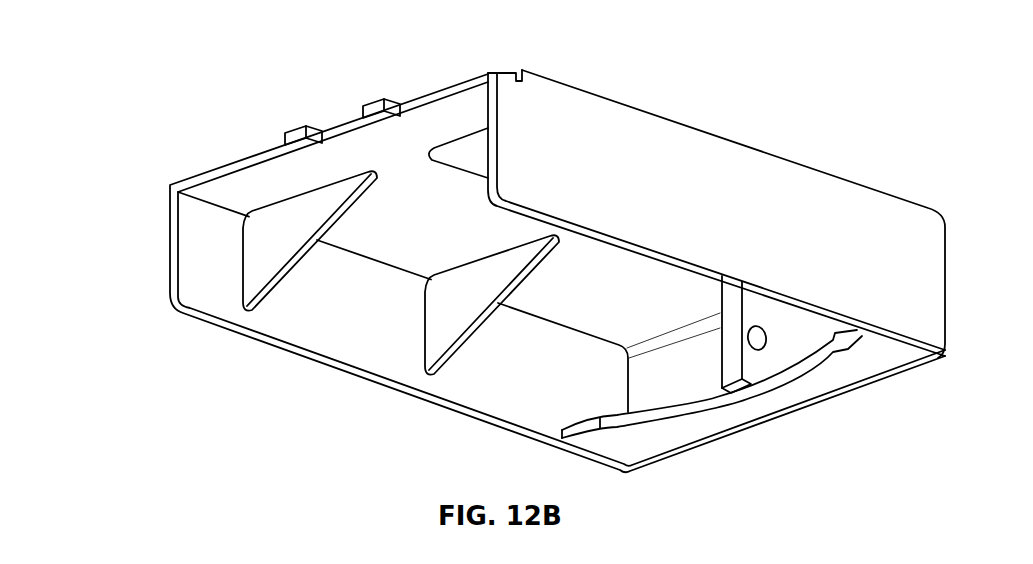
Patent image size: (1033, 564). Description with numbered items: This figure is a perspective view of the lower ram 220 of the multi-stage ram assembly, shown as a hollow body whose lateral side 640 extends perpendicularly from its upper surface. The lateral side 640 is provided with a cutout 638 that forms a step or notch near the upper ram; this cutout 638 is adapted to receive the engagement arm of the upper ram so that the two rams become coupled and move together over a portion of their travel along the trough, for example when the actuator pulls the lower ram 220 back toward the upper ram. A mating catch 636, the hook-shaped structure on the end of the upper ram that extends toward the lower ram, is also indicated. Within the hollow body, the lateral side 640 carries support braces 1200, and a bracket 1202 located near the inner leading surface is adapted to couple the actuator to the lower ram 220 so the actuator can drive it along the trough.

The lower ram 220 is at (120, 100).
The mating catch 636 is at (294, 131).
The cutout 638 is at (502, 72).
The lateral side 640 is at (800, 185).
The support brace 1200 is at (232, 246).
The bracket 1202 is at (756, 351).